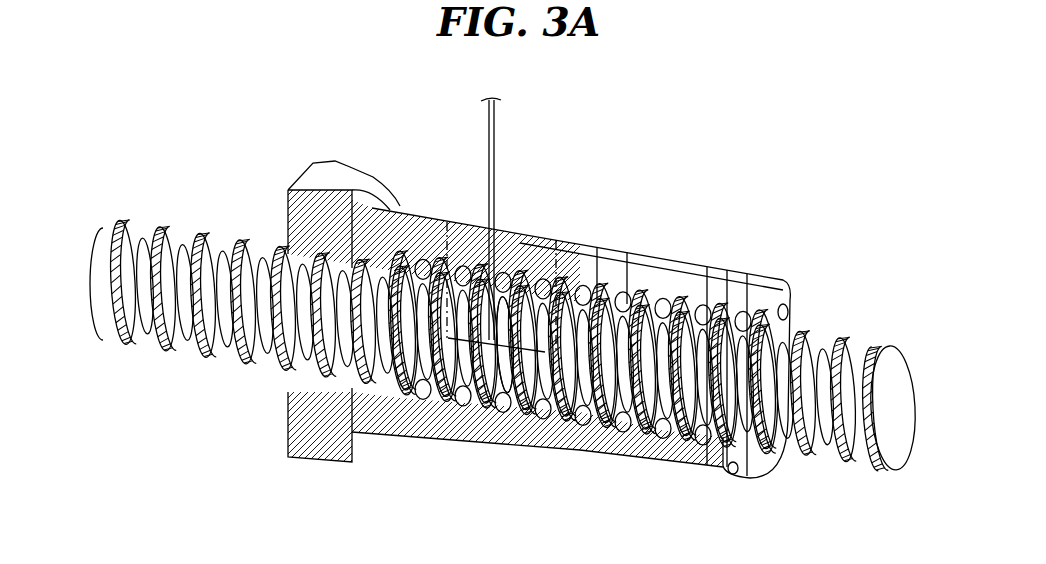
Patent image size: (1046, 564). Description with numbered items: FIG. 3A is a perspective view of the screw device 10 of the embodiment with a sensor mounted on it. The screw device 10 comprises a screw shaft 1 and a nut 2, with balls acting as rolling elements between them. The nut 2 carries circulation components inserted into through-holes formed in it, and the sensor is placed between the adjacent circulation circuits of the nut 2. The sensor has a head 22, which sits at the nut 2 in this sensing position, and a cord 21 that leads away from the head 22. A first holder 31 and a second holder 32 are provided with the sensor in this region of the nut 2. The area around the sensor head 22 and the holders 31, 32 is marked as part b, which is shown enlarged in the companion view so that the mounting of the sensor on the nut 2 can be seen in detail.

The screw shaft 1 is at (838, 370).
The nut 2 is at (687, 263).
The screw device 10 is at (349, 70).
The cord 21 is at (495, 157).
The head 22 is at (510, 295).
The first holder 31 is at (512, 283).
The second holder 32 is at (496, 292).
The part b is at (560, 262).